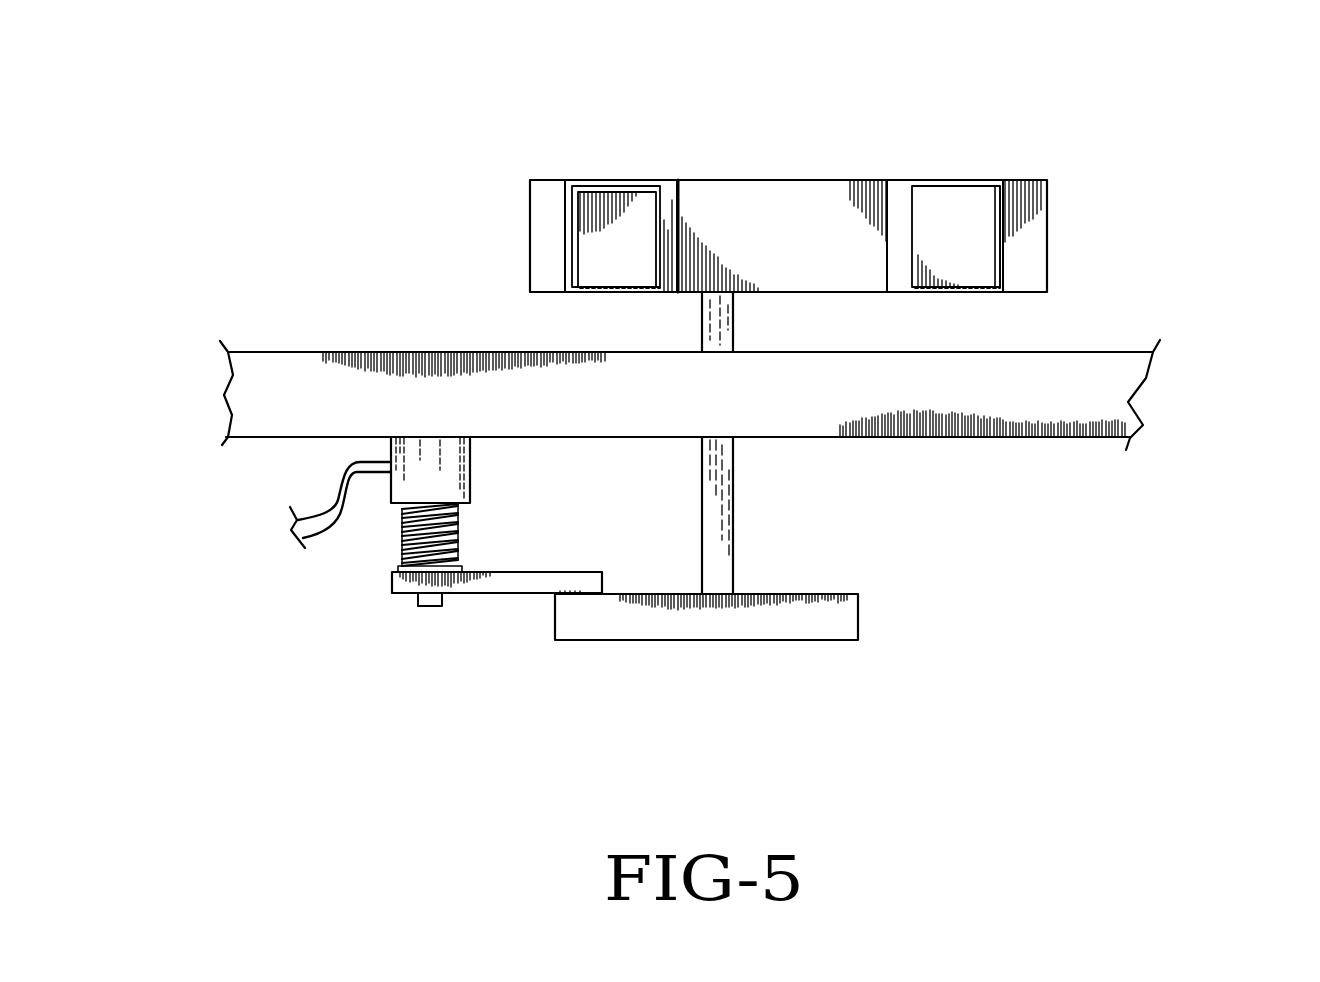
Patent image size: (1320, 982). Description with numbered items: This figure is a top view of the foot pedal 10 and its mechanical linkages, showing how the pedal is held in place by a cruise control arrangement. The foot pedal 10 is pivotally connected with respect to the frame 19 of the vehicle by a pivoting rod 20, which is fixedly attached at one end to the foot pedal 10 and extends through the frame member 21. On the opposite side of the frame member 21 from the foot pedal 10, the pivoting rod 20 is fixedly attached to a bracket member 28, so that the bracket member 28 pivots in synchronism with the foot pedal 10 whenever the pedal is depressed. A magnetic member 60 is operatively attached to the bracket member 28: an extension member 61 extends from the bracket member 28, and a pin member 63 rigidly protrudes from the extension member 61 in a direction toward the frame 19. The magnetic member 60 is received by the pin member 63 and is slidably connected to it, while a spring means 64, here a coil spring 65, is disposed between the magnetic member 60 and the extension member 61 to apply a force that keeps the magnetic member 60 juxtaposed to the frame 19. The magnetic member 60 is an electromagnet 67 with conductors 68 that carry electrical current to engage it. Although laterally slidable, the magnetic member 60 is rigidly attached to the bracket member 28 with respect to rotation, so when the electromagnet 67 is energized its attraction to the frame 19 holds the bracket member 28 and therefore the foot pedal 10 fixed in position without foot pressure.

The foot pedal 10 is at (807, 188).
The frame 19 is at (1102, 362).
The frame member 21 is at (1088, 363).
The pivoting rod 20 is at (730, 480).
The bracket member 28 is at (837, 617).
The magnetic member 60 is at (393, 447).
The extension member 61 is at (480, 592).
The pin member 63 is at (428, 604).
The spring means 64 is at (402, 522).
The coil spring 65 is at (396, 566).
The electromagnet 67 is at (391, 462).
The conductors 68 is at (322, 538).